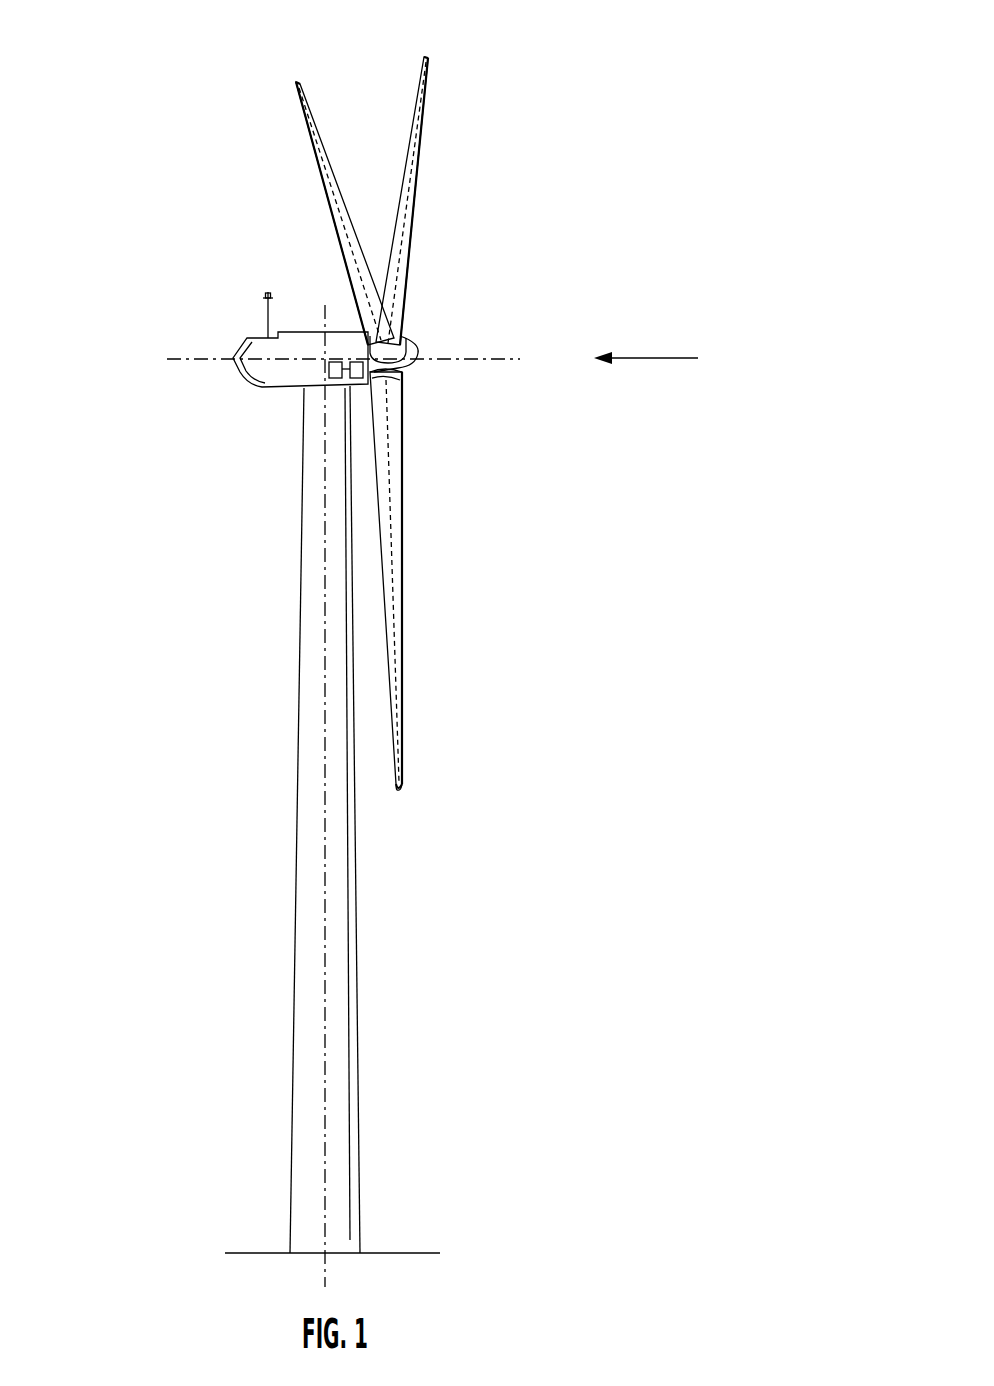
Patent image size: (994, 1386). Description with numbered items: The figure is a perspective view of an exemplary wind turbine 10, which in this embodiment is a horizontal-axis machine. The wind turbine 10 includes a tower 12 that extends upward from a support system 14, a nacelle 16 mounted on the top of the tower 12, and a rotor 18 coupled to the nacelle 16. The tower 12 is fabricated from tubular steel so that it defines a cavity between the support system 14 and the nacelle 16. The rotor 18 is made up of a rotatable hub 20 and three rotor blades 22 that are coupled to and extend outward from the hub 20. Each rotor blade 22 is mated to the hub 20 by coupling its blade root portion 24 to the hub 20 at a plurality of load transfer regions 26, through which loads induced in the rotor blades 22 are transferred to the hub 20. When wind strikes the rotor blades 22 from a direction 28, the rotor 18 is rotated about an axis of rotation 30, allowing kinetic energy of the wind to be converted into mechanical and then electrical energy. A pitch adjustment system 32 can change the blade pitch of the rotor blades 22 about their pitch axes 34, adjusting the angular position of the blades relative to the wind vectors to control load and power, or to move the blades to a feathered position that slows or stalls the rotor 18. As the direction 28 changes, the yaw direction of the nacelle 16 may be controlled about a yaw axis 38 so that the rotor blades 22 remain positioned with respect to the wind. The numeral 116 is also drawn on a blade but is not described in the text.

The wind turbine 10 is at (368, 643).
The tower 12 is at (294, 987).
The support system 14 is at (270, 1253).
The nacelle 16 is at (275, 389).
The rotor 18 is at (399, 400).
The rotatable hub 20 is at (410, 343).
The rotor blade 22 is at (361, 423).
The blade root portion 24 is at (393, 517).
The load transfer regions 26 is at (393, 385).
The direction 28 is at (643, 358).
The axis of rotation 30 is at (492, 361).
The pitch adjustment system 32 is at (357, 378).
The pitch axes 34 is at (297, 81).
The yaw axis 38 is at (335, 378).
The leading edge 116 is at (338, 228).